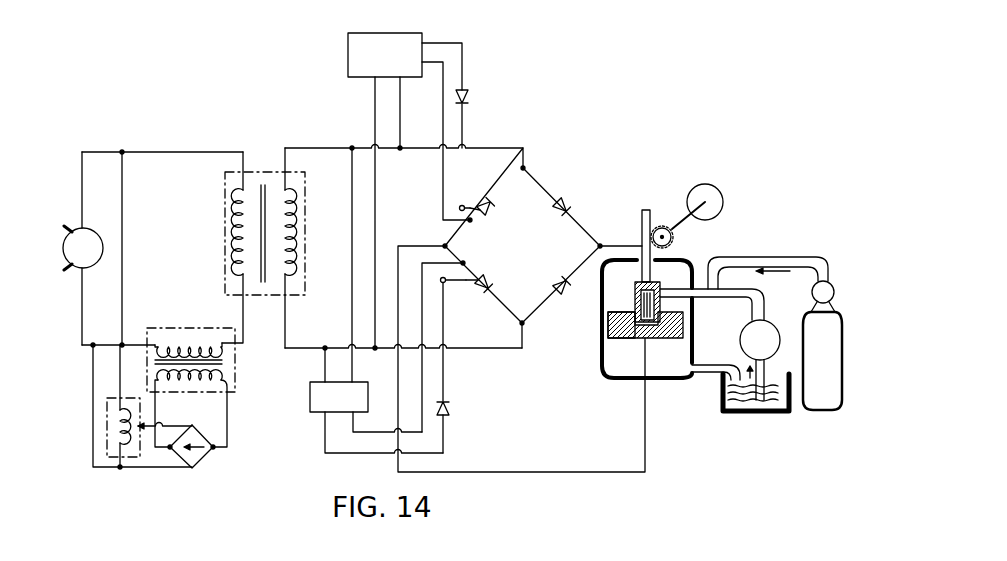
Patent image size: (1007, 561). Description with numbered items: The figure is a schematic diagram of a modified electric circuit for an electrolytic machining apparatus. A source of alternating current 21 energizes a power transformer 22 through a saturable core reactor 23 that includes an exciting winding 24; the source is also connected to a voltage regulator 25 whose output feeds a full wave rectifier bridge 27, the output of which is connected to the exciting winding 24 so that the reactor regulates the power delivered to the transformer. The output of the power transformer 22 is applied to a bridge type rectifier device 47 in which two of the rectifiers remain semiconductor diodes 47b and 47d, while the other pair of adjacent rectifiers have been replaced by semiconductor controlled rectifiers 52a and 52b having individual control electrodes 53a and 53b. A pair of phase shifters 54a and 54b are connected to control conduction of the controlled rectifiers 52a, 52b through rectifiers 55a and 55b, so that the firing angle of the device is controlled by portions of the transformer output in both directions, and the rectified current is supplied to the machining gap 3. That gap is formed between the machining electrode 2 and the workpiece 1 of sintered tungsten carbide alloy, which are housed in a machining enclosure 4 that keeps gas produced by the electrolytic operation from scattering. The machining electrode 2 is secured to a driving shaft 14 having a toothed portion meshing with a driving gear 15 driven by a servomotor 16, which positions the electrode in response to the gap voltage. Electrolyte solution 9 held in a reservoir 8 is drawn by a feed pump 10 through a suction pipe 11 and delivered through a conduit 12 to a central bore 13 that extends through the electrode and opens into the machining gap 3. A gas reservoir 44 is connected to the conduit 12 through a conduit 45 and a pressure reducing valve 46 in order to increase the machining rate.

The machining workpiece 1 is at (664, 335).
The machining electrode 2 is at (636, 292).
The machining gap 3 is at (632, 337).
The machining enclosure 4 is at (626, 380).
The reservoir 8 is at (740, 413).
The electrolyte solution 9 is at (778, 413).
The feed pump 10 is at (740, 340).
The suction pipe 11 is at (767, 372).
The conduit 12 is at (704, 297).
The central bore 13 is at (641, 300).
The driving shaft 14 is at (642, 218).
The driving gear 15 is at (674, 240).
The servomotor 16 is at (700, 186).
The source of alternating current 21 is at (66, 247).
The power transformer 22 is at (276, 165).
The saturable core reactor 23 is at (191, 320).
The exciting winding 24 is at (222, 385).
The voltage regulator 25 is at (109, 460).
The full wave rectifier bridge 27 is at (226, 480).
The gas reservoir 44 is at (822, 361).
The conduit 45 is at (775, 257).
The pressure reducing valve 46 is at (834, 292).
The rectifier device 47 is at (530, 251).
The semiconductor diode 47b is at (569, 205).
The semiconductor diode 47d is at (561, 281).
The semiconductor controlled rectifier 52a is at (464, 204).
The semiconductor controlled rectifier 52b is at (446, 284).
The control electrode 53a is at (495, 210).
The control electrode 53b is at (492, 279).
The phase shifter 54a is at (409, 190).
The phase shifter 54b is at (376, 300).
The rectifier 55a is at (471, 97).
The rectifier 55b is at (461, 366).